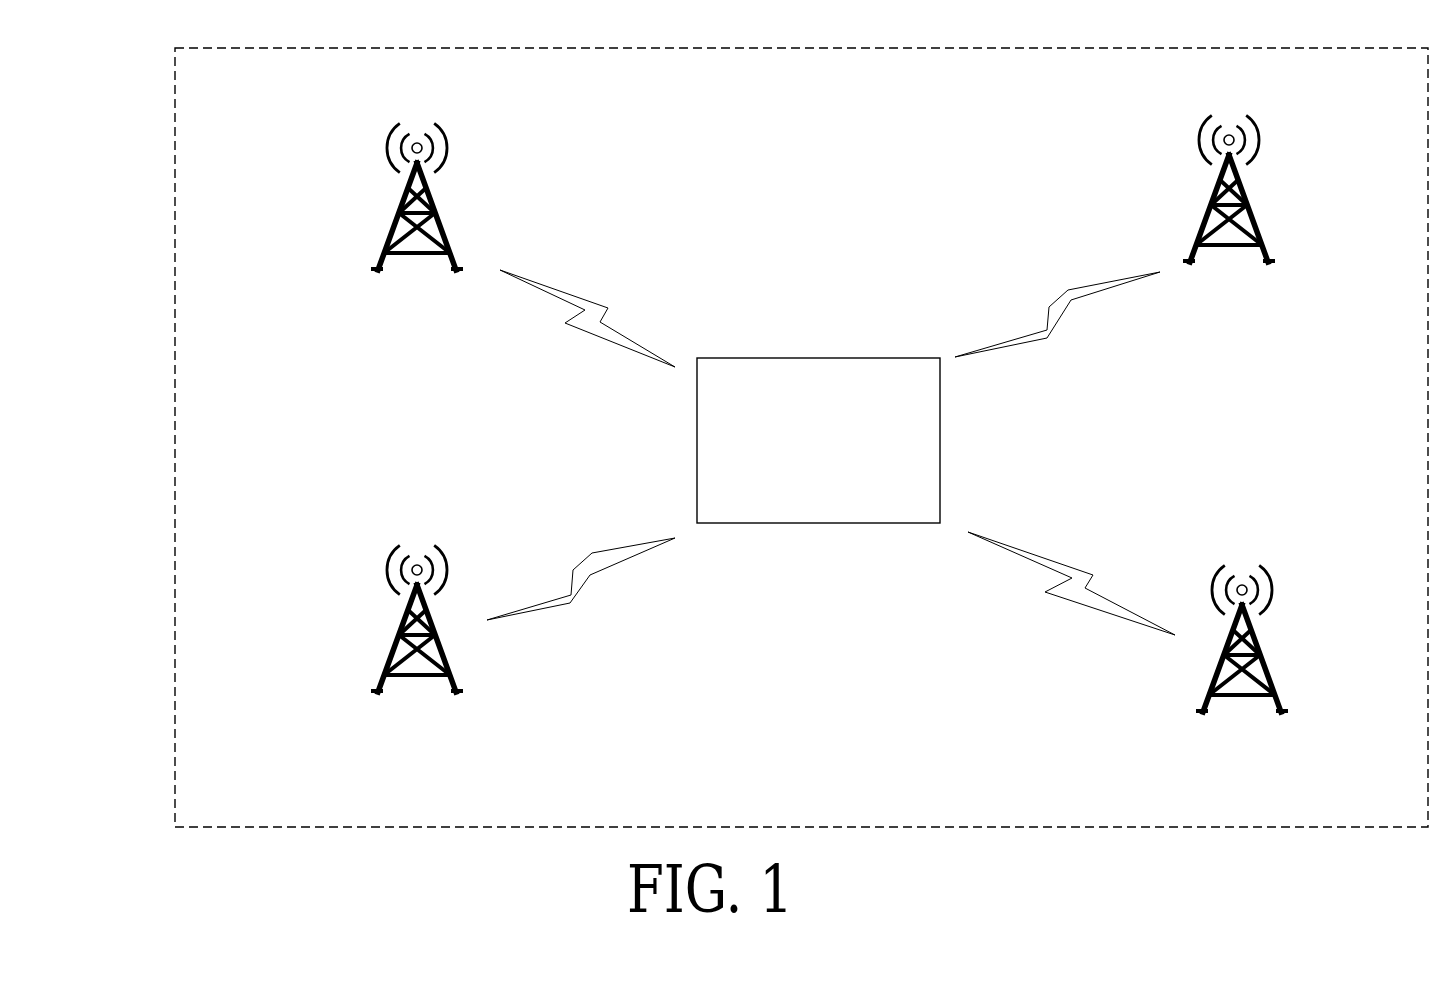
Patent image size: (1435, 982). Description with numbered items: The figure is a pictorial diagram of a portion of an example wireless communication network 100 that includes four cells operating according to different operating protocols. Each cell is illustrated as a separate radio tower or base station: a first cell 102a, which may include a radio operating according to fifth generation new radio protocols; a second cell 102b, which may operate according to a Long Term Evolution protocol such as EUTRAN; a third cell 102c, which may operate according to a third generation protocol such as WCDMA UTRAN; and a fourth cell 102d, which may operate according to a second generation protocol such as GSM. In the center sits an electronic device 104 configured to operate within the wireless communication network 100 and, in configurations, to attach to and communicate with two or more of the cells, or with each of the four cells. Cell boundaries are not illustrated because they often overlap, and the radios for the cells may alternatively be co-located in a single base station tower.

The wireless communication network 100 is at (150, 88).
The first cell 102a is at (417, 221).
The second cell 102b is at (1229, 211).
The third cell 102c is at (417, 642).
The fourth cell 102d is at (1242, 657).
The electronic device 104 is at (836, 466).